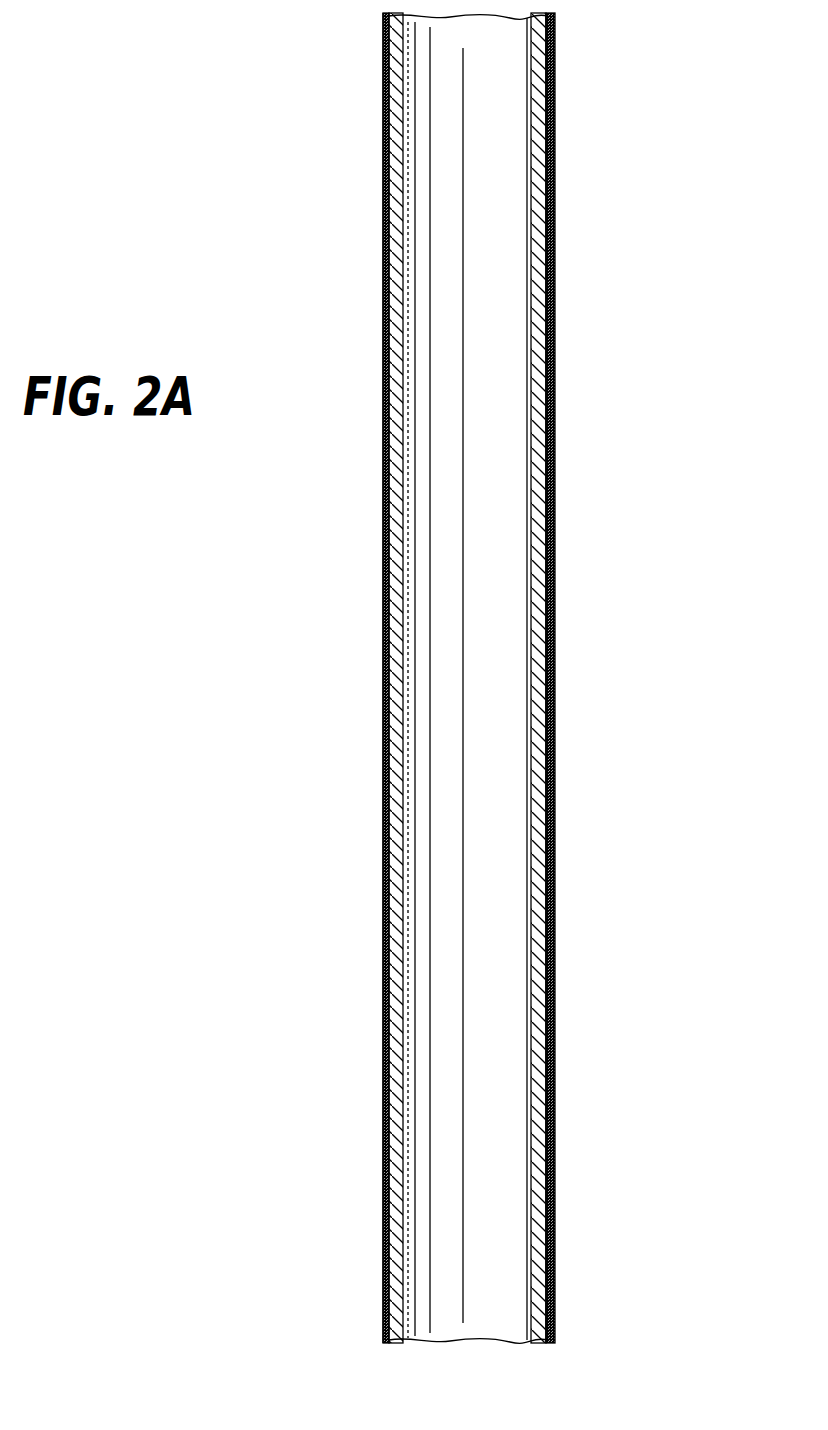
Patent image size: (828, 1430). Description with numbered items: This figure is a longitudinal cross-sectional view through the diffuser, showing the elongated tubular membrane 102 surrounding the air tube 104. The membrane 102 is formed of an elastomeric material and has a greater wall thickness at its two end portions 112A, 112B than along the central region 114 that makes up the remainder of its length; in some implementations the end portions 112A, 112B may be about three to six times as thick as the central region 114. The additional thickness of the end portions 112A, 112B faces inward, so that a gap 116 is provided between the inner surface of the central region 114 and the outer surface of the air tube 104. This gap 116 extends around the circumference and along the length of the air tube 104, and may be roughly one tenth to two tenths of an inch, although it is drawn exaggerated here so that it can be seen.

The elongated tubular membrane 102 is at (553, 315).
The air tube 104 is at (398, 262).
The end portion of the membrane 112A is at (555, 25).
The end portion of the membrane 112B is at (555, 1328).
The central region of the membrane 114 is at (382, 634).
The gap 116 is at (547, 510).